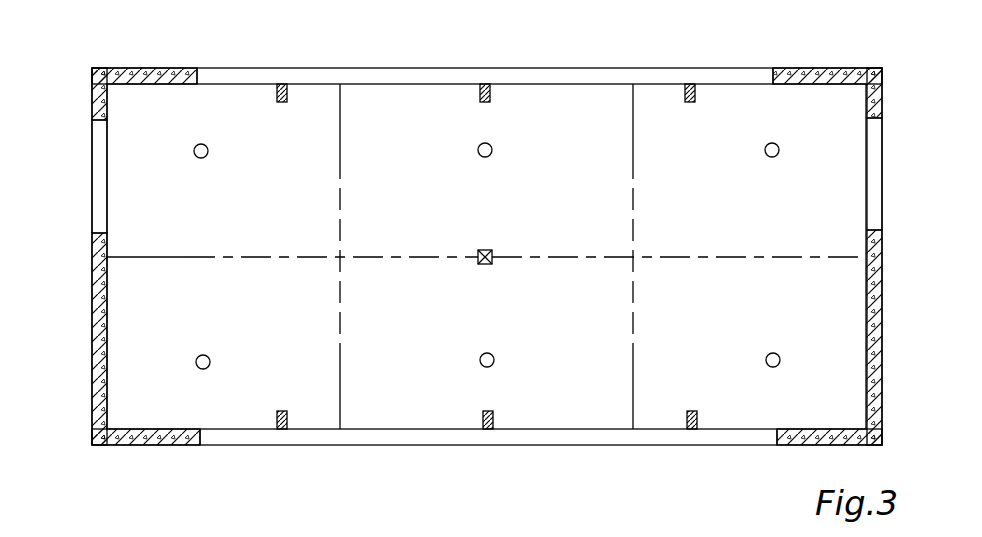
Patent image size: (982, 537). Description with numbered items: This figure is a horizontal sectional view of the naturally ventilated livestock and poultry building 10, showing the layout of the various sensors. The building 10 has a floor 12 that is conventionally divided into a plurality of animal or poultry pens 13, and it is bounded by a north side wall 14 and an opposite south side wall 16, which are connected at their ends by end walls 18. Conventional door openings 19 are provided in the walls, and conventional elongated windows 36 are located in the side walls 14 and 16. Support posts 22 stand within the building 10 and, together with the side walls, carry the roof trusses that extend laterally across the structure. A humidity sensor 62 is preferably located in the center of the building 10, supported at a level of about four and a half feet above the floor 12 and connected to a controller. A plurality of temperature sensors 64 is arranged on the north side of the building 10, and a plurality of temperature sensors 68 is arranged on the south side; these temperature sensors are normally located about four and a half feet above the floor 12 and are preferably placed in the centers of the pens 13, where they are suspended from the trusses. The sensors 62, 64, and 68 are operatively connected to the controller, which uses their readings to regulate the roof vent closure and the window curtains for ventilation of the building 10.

The building 10 is at (104, 40).
The floor 12 is at (413, 318).
The pens 13 is at (225, 110).
The north side wall 14 is at (162, 72).
The south side wall 16 is at (165, 438).
The end walls 18 is at (102, 293).
The door openings 19 is at (102, 160).
The support posts 22 is at (282, 103).
The windows 36 is at (325, 78).
The humidity sensor 62 is at (486, 250).
The temperature sensors 64 is at (202, 158).
The temperature sensors 68 is at (203, 355).